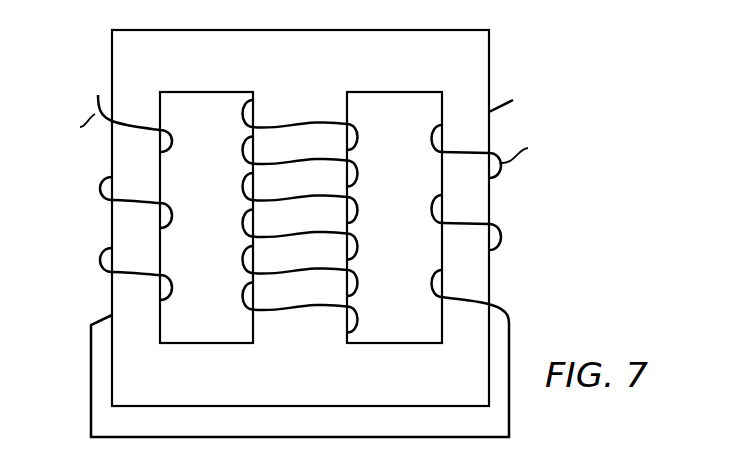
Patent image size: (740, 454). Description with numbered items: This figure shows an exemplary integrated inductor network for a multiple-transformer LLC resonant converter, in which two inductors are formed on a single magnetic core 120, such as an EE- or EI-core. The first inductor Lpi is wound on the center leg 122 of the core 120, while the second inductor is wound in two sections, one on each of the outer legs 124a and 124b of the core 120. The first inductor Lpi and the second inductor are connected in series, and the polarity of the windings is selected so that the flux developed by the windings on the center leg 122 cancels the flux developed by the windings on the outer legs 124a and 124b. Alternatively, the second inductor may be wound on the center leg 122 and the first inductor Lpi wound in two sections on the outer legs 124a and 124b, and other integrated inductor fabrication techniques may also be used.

The magnetic core 120 is at (113, 63).
The center leg 122 is at (340, 108).
The outer leg 124a is at (120, 225).
The outer leg 124b is at (482, 275).
The first inductor Lpi is at (245, 146).